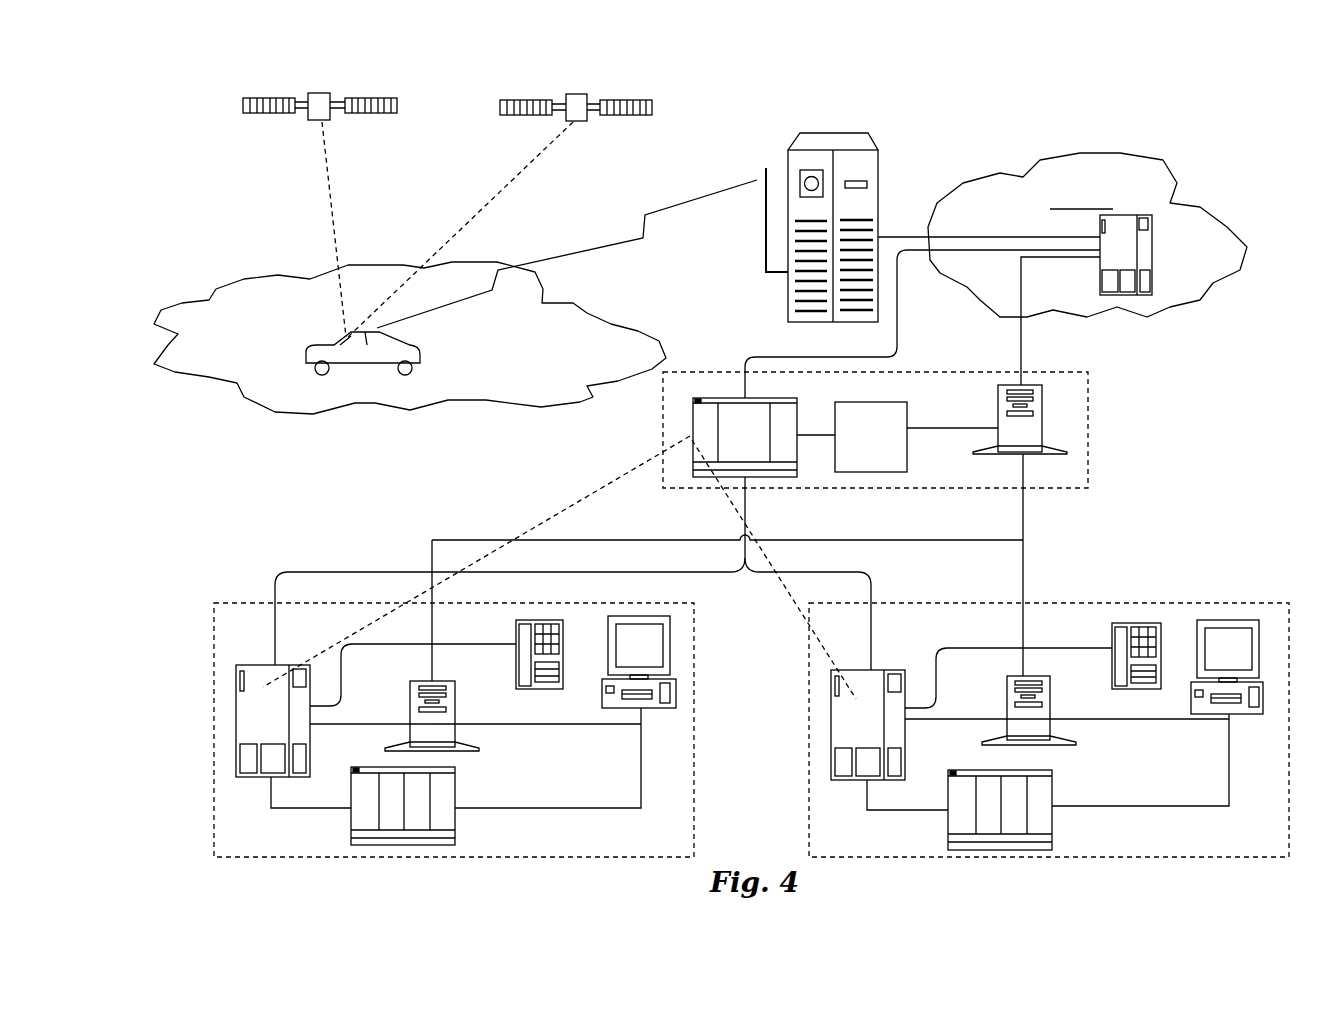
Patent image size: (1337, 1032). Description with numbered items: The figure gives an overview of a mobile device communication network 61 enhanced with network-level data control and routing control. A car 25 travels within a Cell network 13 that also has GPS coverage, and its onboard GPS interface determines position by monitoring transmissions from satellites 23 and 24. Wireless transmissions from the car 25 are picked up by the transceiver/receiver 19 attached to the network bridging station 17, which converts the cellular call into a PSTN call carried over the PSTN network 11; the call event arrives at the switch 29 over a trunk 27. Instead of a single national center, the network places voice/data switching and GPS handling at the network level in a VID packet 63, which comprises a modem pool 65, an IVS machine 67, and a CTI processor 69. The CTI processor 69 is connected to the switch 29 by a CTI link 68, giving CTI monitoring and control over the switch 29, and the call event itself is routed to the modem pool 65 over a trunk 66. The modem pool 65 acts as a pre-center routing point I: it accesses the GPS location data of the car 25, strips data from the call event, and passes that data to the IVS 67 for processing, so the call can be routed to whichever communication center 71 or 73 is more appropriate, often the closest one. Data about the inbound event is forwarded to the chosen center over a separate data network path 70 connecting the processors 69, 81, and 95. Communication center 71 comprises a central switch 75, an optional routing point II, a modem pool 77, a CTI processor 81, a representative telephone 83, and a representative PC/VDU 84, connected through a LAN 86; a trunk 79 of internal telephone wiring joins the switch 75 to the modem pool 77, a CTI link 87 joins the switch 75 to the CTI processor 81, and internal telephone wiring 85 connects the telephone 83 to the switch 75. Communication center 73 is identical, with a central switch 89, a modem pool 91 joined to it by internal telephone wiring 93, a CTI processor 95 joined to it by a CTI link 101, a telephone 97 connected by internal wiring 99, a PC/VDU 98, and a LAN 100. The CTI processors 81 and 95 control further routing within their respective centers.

The PSTN network 11 is at (1085, 157).
The Cell network 13 is at (310, 279).
The network bridging station 17 is at (833, 132).
The transceiver/receiver device 19 is at (772, 273).
The satellite 23 is at (320, 93).
The satellite 24 is at (577, 94).
The car 25 is at (306, 364).
The trunk 27 is at (1027, 237).
The switch 29 is at (1153, 262).
The mobile device communication network 61 is at (229, 468).
The VID packet 63 is at (1105, 427).
The modem pool 65 is at (758, 477).
The trunk 66 is at (897, 293).
The IVS machine 67 is at (885, 402).
The CTI link 68 is at (1019, 355).
The CTI processor 69 is at (1033, 385).
The path 70 is at (702, 538).
The communication center 71 is at (204, 756).
The communication center 73 is at (801, 717).
The central switch 75 is at (263, 665).
The modem pool 77 is at (457, 826).
The trunk 79 is at (308, 814).
The CTI processor 81 is at (455, 714).
The representative telephone 83 is at (539, 624).
The representative PC/VDU 84 is at (631, 616).
The internal telephone wiring 85 is at (412, 644).
The LAN 86 is at (584, 728).
The CTI link 87 is at (322, 726).
The central switch 89 is at (886, 670).
The modem pool 91 is at (1052, 831).
The trunk 93 is at (908, 812).
The CTI processor 95 is at (1050, 706).
The representative telephone 97 is at (1129, 623).
The representative PC/VDU 98 is at (1210, 620).
The internal wiring 99 is at (1010, 648).
The LAN 100 is at (1172, 721).
The CTI link 101 is at (918, 723).